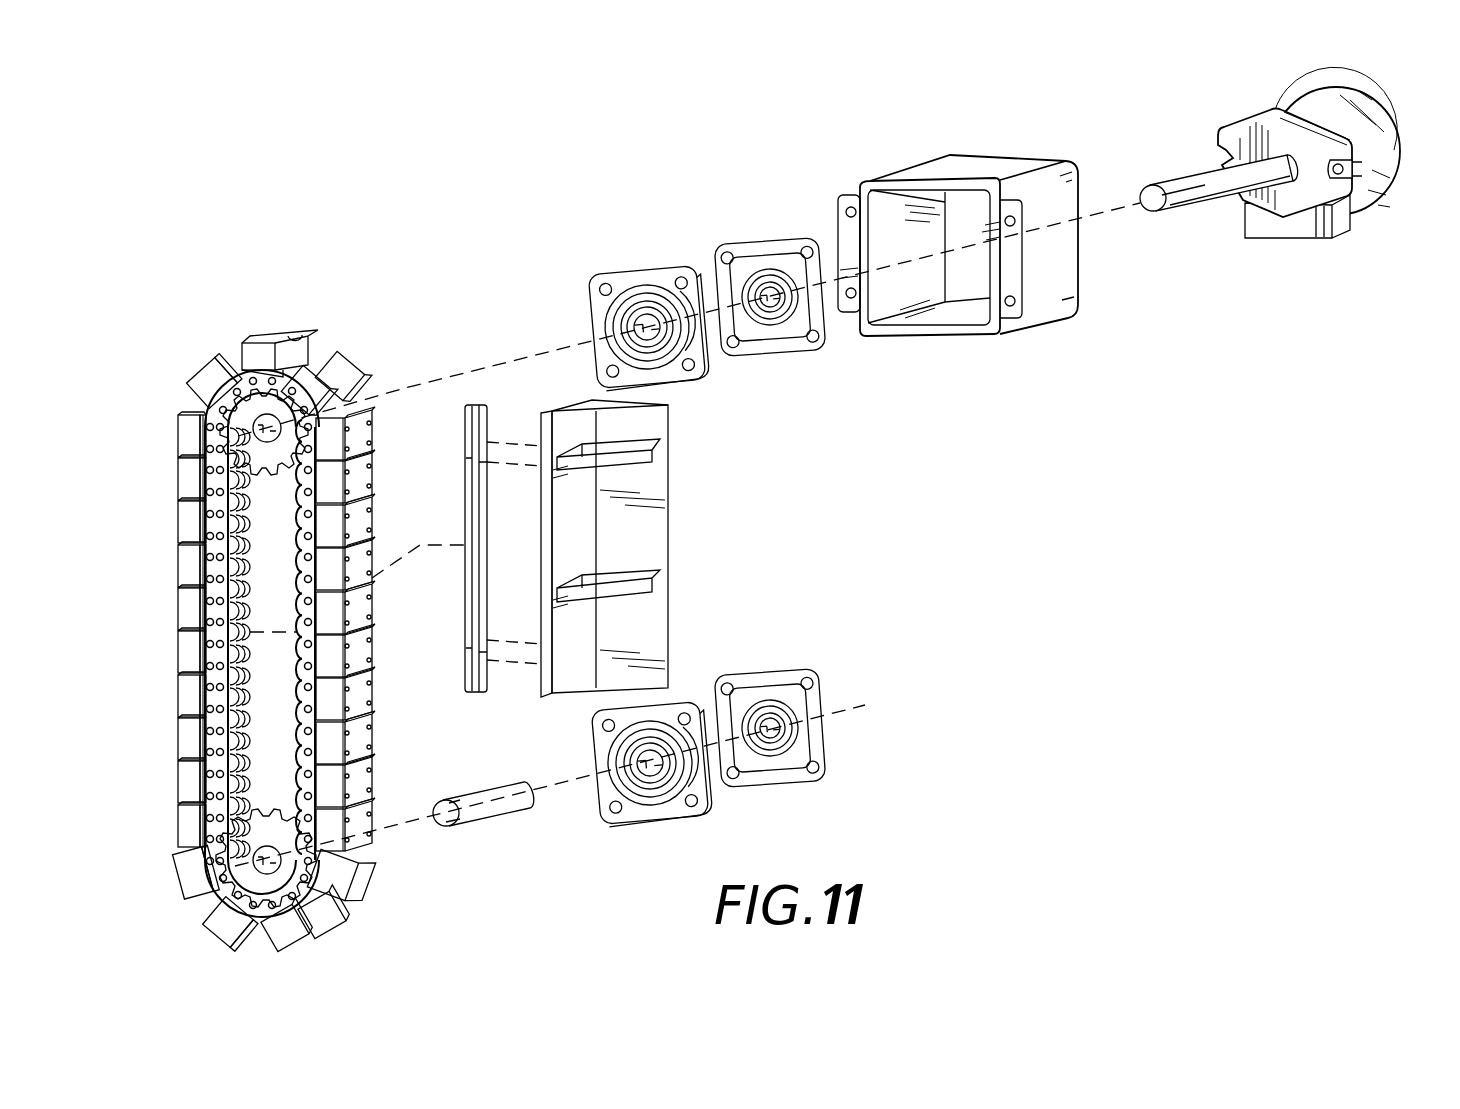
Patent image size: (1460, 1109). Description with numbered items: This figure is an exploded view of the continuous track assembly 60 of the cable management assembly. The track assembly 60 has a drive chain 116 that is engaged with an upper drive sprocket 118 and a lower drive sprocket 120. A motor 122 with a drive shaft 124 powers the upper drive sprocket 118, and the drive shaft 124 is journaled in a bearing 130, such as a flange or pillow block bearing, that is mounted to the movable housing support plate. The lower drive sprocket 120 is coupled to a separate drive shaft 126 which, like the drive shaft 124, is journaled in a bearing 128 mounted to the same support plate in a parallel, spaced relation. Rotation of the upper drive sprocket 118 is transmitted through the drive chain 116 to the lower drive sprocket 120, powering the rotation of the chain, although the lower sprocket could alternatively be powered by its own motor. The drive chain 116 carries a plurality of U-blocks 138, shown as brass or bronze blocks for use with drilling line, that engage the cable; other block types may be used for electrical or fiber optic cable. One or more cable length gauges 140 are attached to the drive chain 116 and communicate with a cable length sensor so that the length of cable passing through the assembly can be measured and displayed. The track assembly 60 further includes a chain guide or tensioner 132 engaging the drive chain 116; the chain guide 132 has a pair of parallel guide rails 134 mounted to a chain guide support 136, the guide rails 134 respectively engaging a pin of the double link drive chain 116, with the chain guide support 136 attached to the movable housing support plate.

The track assembly 60 is at (398, 166).
The drive chain 116 is at (218, 480).
The upper drive sprocket 118 is at (253, 410).
The lower drive sprocket 120 is at (225, 915).
The motor 122 is at (1378, 130).
The drive shaft 124 is at (1185, 205).
The drive shaft 126 is at (497, 815).
The bearing 128 is at (640, 800).
The bearing 130 is at (635, 278).
The chain guide 132 is at (756, 566).
The guide rails 134 is at (466, 430).
The chain guide support 136 is at (672, 480).
The U-blocks 138 is at (178, 702).
The cable length gauges 140 is at (375, 738).